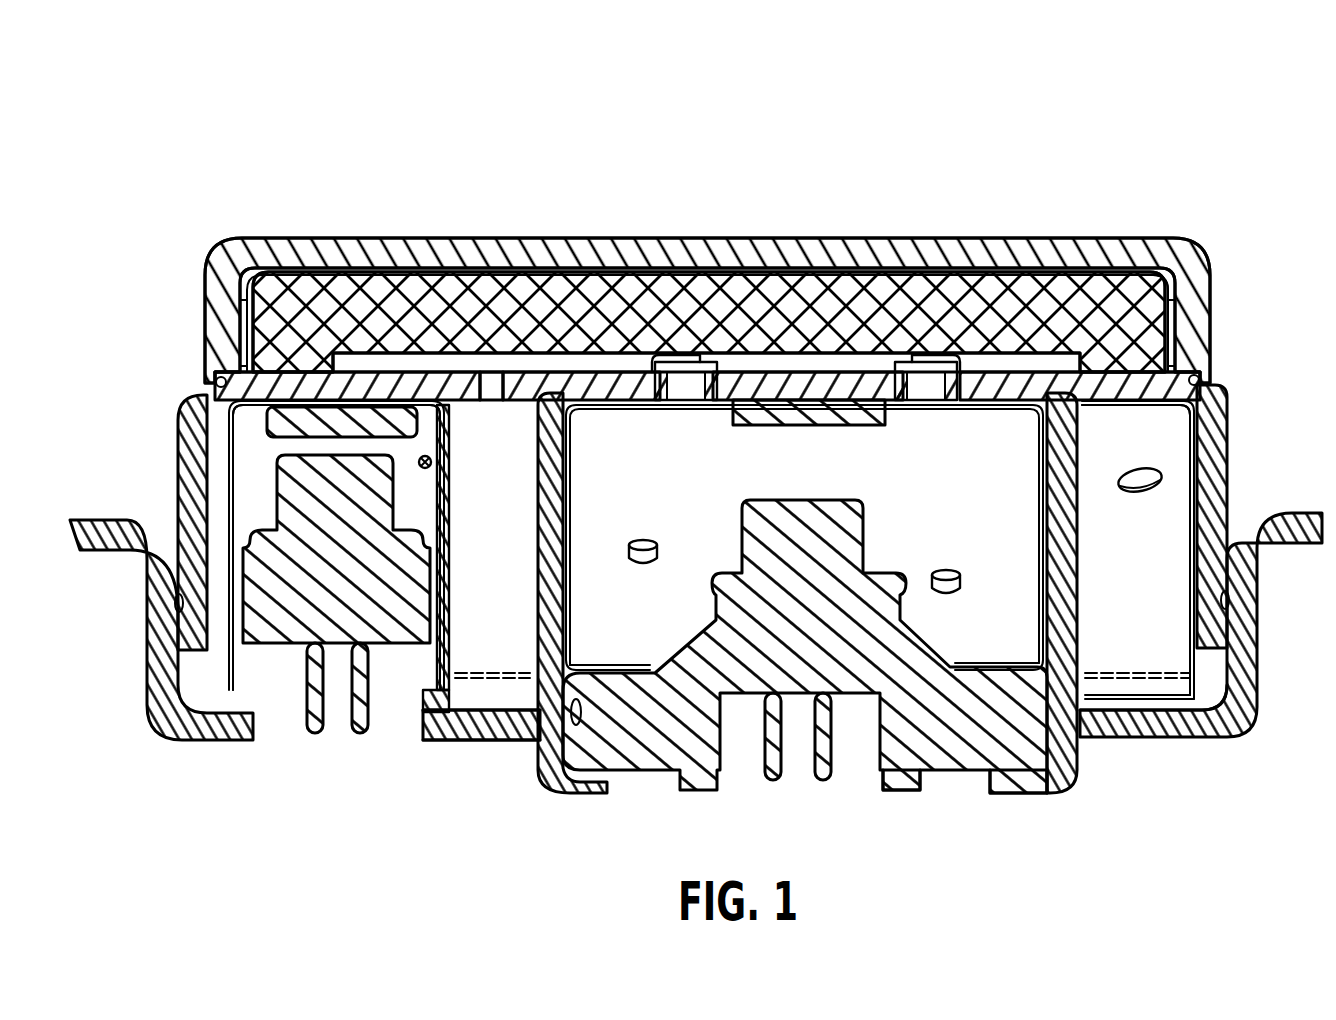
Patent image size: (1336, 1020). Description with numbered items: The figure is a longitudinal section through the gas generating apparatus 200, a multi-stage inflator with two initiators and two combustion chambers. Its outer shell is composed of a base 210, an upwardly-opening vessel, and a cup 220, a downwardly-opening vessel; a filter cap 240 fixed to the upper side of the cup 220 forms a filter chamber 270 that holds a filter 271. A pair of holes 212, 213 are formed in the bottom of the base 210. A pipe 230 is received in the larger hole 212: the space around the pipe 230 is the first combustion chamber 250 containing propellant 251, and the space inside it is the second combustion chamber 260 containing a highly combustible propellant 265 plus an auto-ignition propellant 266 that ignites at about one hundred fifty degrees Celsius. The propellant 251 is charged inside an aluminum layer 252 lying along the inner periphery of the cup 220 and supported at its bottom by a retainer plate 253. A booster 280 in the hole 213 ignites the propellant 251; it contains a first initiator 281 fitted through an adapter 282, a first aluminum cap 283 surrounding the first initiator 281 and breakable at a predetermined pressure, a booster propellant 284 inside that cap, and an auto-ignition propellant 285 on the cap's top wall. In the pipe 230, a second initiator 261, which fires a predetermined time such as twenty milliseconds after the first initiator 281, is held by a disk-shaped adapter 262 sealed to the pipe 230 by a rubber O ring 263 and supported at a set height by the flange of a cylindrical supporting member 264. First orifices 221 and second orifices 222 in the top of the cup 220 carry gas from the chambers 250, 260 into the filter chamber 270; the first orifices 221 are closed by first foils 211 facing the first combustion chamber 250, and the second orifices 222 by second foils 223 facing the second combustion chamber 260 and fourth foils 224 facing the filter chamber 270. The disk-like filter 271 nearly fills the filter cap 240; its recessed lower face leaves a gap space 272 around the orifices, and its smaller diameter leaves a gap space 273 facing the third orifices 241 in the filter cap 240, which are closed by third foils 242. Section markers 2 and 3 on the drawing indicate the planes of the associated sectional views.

The gas generating apparatus 200 is at (565, 118).
The base 210 is at (1255, 698).
The first foils 211 is at (484, 385).
The hole 212 is at (1078, 732).
The hole 213 is at (448, 732).
The cup 220 is at (1210, 467).
The first orifices 221 is at (493, 398).
The second orifices 222 is at (700, 392).
The second foils 223 is at (676, 405).
The fourth foils 224 is at (627, 372).
The pipe 230 is at (1077, 578).
The filter cap 240 is at (323, 250).
The third orifices 241 is at (224, 340).
The third foils 242 is at (236, 328).
The first combustion chamber 250 is at (465, 603).
The propellant 251 is at (1142, 492).
The aluminum layer 252 is at (1190, 548).
The retainer plate 253 is at (1157, 668).
The second combustion chamber 260 is at (606, 646).
The second initiator 261 is at (838, 695).
The adapter 262 is at (947, 765).
The sealing O ring 263 is at (588, 718).
The cylindrical supporting member 264 is at (1037, 600).
The propellant 265 is at (642, 540).
The auto-ignition propellant 266 is at (822, 412).
The filter chamber 270 is at (651, 268).
The filter 271 is at (493, 276).
The gap space 272 is at (582, 375).
The gap space 273 is at (1175, 270).
The booster 280 is at (310, 752).
The first initiator 281 is at (375, 643).
The adapter 282 is at (270, 617).
The first aluminum cap 283 is at (449, 540).
The booster propellant 284 is at (432, 466).
The auto-ignition propellant 285 is at (283, 427).
The section line 3- 3 is at (148, 316).
The section line 2- 2 is at (147, 455).